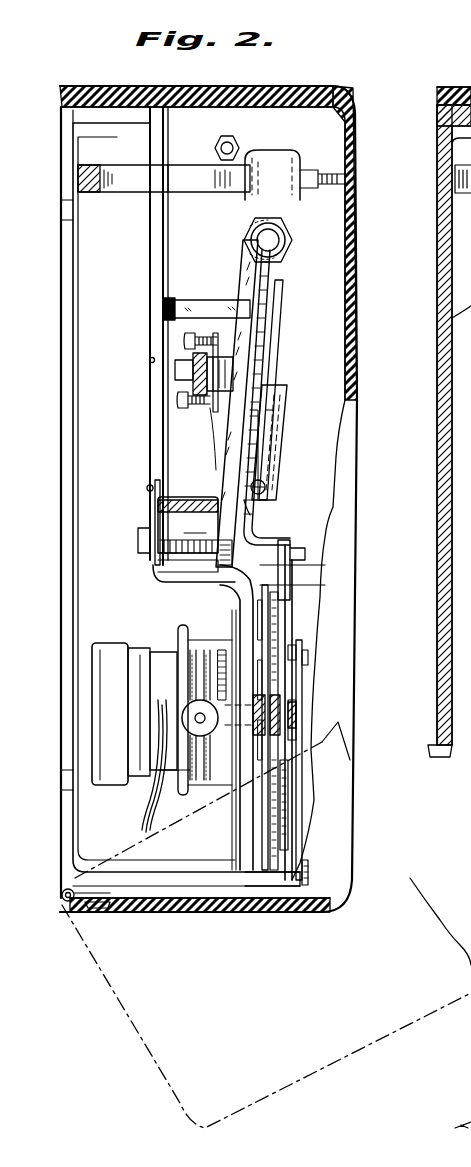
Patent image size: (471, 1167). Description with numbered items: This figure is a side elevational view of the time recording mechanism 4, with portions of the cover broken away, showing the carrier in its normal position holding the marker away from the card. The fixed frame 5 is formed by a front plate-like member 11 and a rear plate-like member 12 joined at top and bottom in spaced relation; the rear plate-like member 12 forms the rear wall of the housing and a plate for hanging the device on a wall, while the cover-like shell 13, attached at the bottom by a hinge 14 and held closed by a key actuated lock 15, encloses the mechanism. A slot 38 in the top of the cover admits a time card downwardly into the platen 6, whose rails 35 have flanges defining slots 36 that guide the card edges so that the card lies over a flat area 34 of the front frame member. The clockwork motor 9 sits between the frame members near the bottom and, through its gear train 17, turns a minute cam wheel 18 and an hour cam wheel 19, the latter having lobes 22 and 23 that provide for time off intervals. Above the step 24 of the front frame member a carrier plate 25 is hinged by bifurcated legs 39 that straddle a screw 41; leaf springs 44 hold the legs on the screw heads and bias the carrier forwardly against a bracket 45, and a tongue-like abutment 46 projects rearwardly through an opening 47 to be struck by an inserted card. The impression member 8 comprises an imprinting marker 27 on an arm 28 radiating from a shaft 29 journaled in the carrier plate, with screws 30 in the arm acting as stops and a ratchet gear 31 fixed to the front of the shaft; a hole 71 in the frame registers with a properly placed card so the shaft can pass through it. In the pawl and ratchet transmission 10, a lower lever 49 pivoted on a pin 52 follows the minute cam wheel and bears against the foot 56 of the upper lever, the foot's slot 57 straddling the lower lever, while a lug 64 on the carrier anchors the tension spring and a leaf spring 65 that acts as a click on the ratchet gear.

The time recording mechanism 4 is at (337, 83).
The fixed frame 5 is at (49, 361).
The platen 6 is at (181, 237).
The impression member 8 is at (200, 421).
The clockwork motor 9 is at (157, 655).
The pawl and ratchet transmission 10 is at (303, 666).
The front plate-like member 11 is at (150, 278).
The rear plate-like member 12 is at (84, 326).
The cover-like shell 13 is at (340, 609).
The hinge 14 is at (60, 906).
The key actuated lock 15 is at (297, 262).
The gear train 17 is at (212, 655).
The minute cam wheel 18 is at (283, 690).
The hour cam wheel 19 is at (287, 807).
The lobe 22 is at (270, 613).
The lobe 23 is at (285, 872).
The step 24 is at (174, 562).
The carrier plate 25 is at (236, 274).
The imprinting marker 27 is at (195, 383).
The arm 28 is at (216, 412).
The shaft 29 is at (178, 370).
The screws 30 is at (185, 340).
The ratchet gear 31 is at (275, 333).
The flat area 34 is at (170, 284).
The rails 35 is at (176, 212).
The slots 36 is at (164, 224).
The slot 38 is at (165, 100).
The legs 39 is at (224, 562).
The screw 41 is at (196, 562).
The leaf springs 44 is at (166, 521).
The bracket 45 is at (250, 307).
The tongue-like abutment 46 is at (203, 500).
The opening 47 is at (152, 491).
The lower lever 49 is at (287, 588).
The pin 52 is at (300, 868).
The foot 56 is at (303, 548).
The slot 57 is at (322, 568).
The lug 64 is at (268, 480).
The leaf spring 65 is at (260, 433).
The hole 71 is at (148, 356).